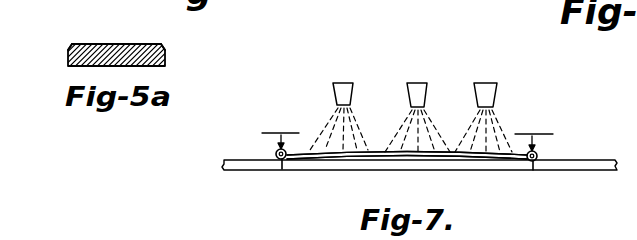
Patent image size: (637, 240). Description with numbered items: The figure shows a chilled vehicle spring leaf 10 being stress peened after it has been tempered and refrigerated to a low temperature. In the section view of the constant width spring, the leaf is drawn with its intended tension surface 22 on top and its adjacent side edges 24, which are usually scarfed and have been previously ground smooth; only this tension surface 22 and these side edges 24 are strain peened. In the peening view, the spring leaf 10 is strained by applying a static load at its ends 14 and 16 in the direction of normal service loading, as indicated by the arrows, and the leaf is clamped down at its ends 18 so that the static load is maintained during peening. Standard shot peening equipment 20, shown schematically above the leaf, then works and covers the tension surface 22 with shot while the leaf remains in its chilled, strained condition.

In FIG. 5A, the spring leaf 10 is at (136, 44).
In FIG. 7, the spring leaf 10 is at (446, 158).
In FIG. 7, the end of the leaf 14 is at (276, 151).
In FIG. 7, the end of the leaf 16 is at (538, 152).
In FIG. 7, the clamp 18 is at (282, 169).
In FIG. 7, the shot peening equipment 20 is at (480, 93).
In FIG. 5A, the tension surface 22 is at (127, 44).
In FIG. 7, the tension surface 22 is at (374, 150).
In FIG. 5A, the side edges 24 is at (72, 45).
In FIG. 7, the side edges 24 is at (410, 154).